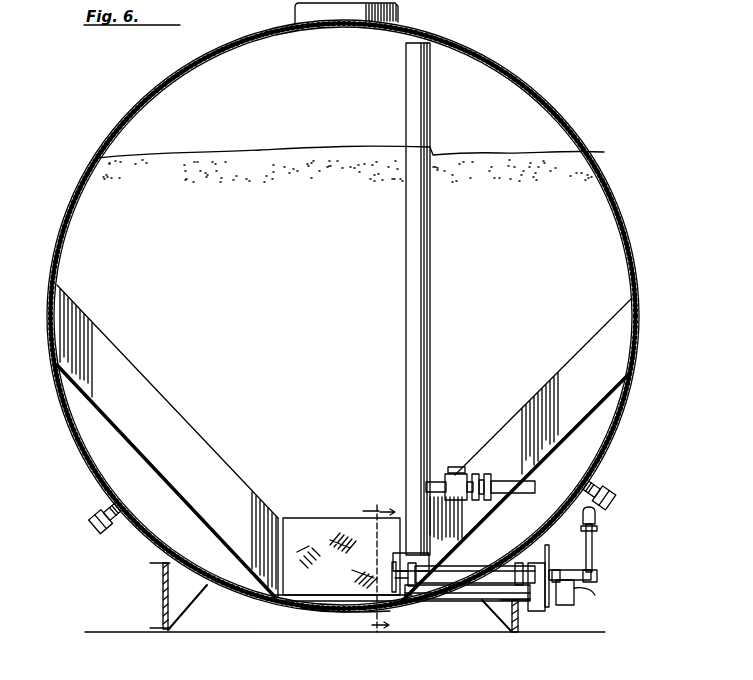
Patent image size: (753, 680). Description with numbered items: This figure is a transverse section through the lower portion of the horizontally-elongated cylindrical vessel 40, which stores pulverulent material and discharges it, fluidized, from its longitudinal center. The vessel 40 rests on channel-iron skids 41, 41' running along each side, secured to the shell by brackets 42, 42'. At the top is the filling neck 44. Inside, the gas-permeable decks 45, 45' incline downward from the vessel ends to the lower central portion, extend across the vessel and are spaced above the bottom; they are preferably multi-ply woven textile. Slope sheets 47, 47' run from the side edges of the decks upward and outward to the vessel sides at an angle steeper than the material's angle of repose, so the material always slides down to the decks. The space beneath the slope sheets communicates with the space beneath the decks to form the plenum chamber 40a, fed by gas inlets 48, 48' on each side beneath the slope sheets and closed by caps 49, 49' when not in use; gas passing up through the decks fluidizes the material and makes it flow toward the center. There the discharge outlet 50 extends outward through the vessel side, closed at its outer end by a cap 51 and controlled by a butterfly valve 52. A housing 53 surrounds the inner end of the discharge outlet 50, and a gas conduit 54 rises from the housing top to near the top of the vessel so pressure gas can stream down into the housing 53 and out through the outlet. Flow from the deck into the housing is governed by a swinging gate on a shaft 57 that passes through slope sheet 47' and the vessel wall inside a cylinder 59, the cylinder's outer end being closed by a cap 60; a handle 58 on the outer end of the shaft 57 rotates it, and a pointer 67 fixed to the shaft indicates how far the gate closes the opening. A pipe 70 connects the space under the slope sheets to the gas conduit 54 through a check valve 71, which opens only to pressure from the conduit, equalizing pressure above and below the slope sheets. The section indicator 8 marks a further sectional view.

The vessel 40 is at (619, 216).
The plenum chamber 40a is at (350, 612).
The skid 41 is at (192, 607).
The skid 41' is at (530, 616).
The bracket 42 is at (345, 597).
The bracket 42' is at (504, 636).
The filling neck 44 is at (400, 15).
The gas-permeable deck 45 is at (339, 526).
The gas-permeable deck 45' is at (343, 634).
The slope sheet 47 is at (167, 441).
The slope sheet 47' is at (516, 450).
The gas inlet 48 is at (107, 539).
The gas inlet 48' is at (612, 476).
The cap 49 is at (62, 522).
The cap 49' is at (629, 513).
The discharge outlet 50 is at (470, 603).
The cap 51 is at (560, 604).
The butterfly valve 52 is at (555, 614).
The housing 53 is at (442, 565).
The gas conduit 54 is at (428, 356).
The shaft 57 is at (578, 590).
The handle 58 is at (593, 546).
The cylinder 59 is at (490, 568).
The cap 60 is at (538, 565).
The pointer 67 is at (556, 566).
The pipe 70 is at (440, 479).
The check valve 71 is at (461, 483).
The section line 8 is at (379, 572).